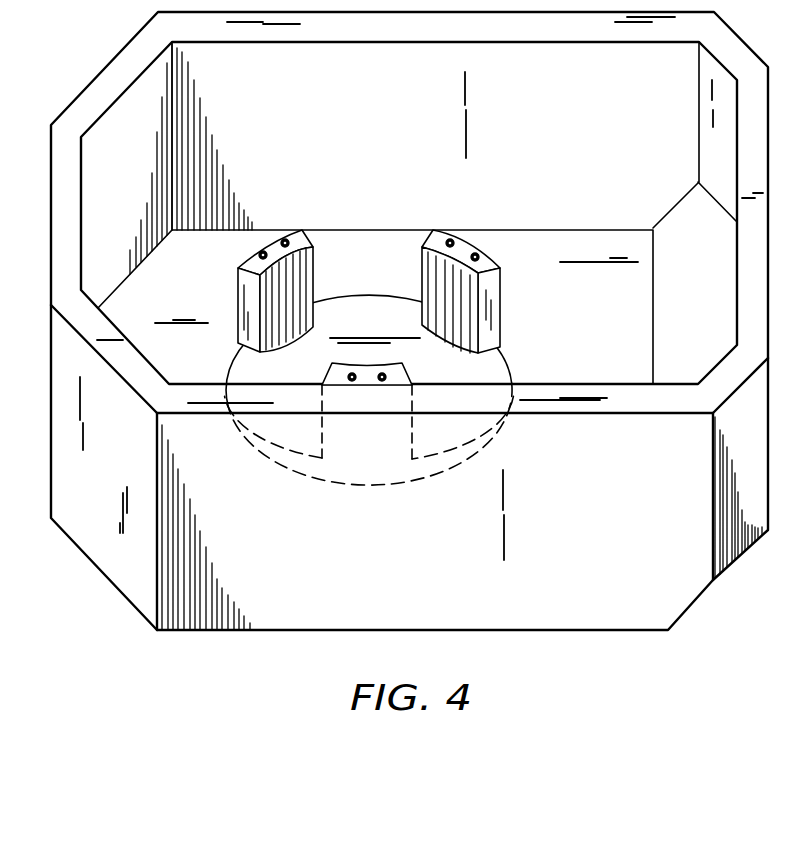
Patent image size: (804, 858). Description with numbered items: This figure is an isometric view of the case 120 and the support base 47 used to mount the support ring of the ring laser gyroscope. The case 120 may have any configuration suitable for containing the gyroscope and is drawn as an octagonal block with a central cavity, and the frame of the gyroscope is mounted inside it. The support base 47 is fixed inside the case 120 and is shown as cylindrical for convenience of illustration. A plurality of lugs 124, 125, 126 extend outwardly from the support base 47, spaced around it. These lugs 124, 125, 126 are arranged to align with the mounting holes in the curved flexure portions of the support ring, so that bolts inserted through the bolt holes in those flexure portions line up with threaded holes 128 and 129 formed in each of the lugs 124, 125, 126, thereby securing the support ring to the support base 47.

The case 120 is at (637, 631).
The support base 47 is at (514, 355).
The lug 124 is at (403, 366).
The lug 125 is at (476, 271).
The lug 126 is at (239, 266).
The threaded hole 128 is at (480, 255).
The threaded hole 129 is at (447, 241).